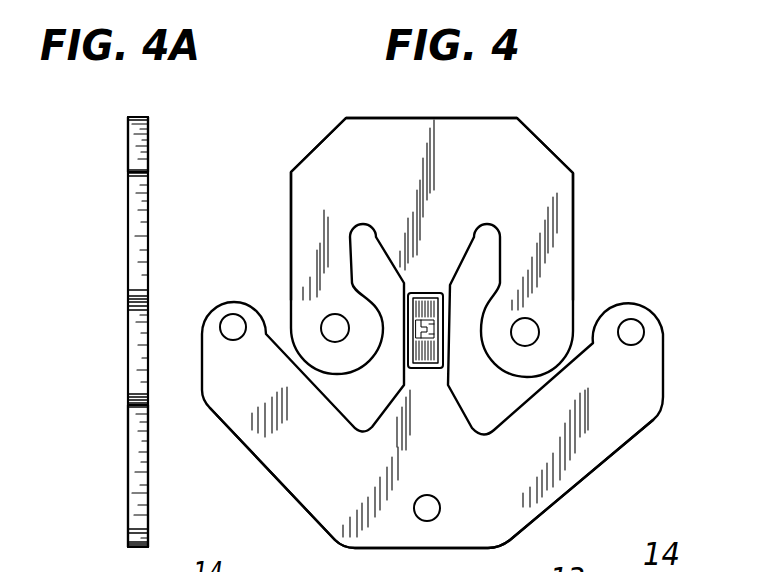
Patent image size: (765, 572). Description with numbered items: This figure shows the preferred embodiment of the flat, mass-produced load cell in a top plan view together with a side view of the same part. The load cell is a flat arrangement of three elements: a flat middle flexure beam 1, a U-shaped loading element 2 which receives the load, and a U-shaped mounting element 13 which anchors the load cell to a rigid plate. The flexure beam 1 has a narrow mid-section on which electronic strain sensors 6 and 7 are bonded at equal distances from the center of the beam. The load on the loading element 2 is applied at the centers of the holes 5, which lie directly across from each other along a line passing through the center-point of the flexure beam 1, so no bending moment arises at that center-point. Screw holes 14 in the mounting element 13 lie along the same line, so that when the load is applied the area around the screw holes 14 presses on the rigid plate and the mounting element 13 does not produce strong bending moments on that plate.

In FIG. 4A, the flexure beam 1 is at (148, 370).
In FIG. 4, the flexure beam 1 is at (438, 407).
In FIG. 4A, the loading element 2 is at (150, 143).
In FIG. 4, the loading element 2 is at (525, 158).
In FIG. 4, the holes 5 is at (330, 323).
In FIG. 4, the electronic strain sensor 6 is at (428, 296).
In FIG. 4, the electronic strain sensor 7 is at (438, 355).
In FIG. 4A, the U-shaped mounting element 13 is at (148, 530).
In FIG. 4, the U-shaped mounting element 13 is at (540, 497).
In FIG. 4A, the screw holes 14 is at (127, 322).
In FIG. 4, the screw holes 14 is at (232, 316).